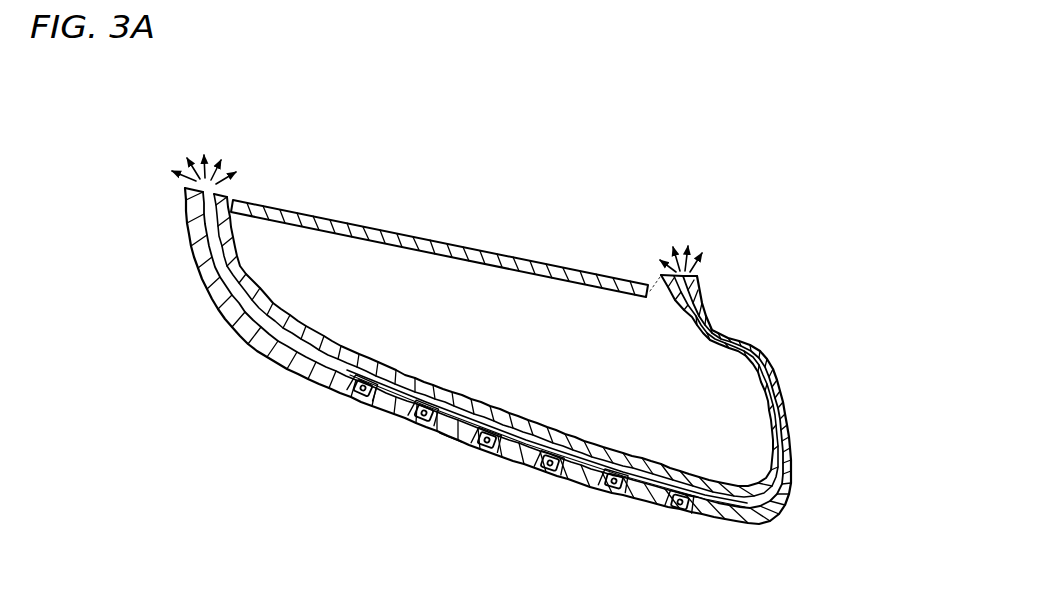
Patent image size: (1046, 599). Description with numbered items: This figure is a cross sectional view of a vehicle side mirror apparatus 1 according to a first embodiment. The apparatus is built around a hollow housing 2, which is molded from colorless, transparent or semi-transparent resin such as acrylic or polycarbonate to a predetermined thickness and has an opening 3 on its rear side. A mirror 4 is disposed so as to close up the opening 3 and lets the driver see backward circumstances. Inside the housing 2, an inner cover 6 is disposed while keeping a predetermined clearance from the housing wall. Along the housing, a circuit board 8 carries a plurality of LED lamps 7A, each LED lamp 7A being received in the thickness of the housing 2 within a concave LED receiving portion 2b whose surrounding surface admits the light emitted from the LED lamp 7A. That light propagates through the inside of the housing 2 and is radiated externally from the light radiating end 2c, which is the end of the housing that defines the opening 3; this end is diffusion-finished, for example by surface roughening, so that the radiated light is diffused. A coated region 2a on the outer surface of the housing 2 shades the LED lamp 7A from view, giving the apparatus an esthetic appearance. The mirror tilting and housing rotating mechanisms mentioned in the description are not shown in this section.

The vehicle side mirror apparatus 1 is at (548, 178).
The housing 2 is at (270, 353).
The coated region 2a is at (450, 438).
The LED receiving portion 2b is at (543, 468).
The light radiating end 2c is at (183, 182).
The opening 3 is at (637, 263).
The mirror 4 is at (528, 258).
The inner cover 6 is at (240, 267).
The LED lamp 7A is at (417, 418).
The circuit board 8 is at (657, 505).